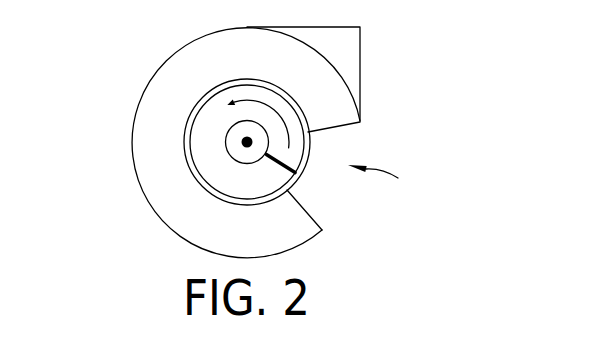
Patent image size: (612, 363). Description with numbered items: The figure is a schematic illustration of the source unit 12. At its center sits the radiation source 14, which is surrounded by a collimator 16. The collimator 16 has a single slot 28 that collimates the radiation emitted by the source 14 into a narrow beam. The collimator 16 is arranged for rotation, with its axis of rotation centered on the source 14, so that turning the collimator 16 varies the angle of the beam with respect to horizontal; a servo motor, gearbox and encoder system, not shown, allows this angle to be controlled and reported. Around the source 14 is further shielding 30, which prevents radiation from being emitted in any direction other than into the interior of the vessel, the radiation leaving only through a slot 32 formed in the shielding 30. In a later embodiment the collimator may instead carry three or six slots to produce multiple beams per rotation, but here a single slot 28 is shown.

The source unit 12 is at (416, 93).
The source 14 is at (246, 141).
The collimator 16 is at (203, 140).
The slot 28 is at (313, 182).
The shielding 30 is at (172, 214).
The slot 32 is at (385, 177).